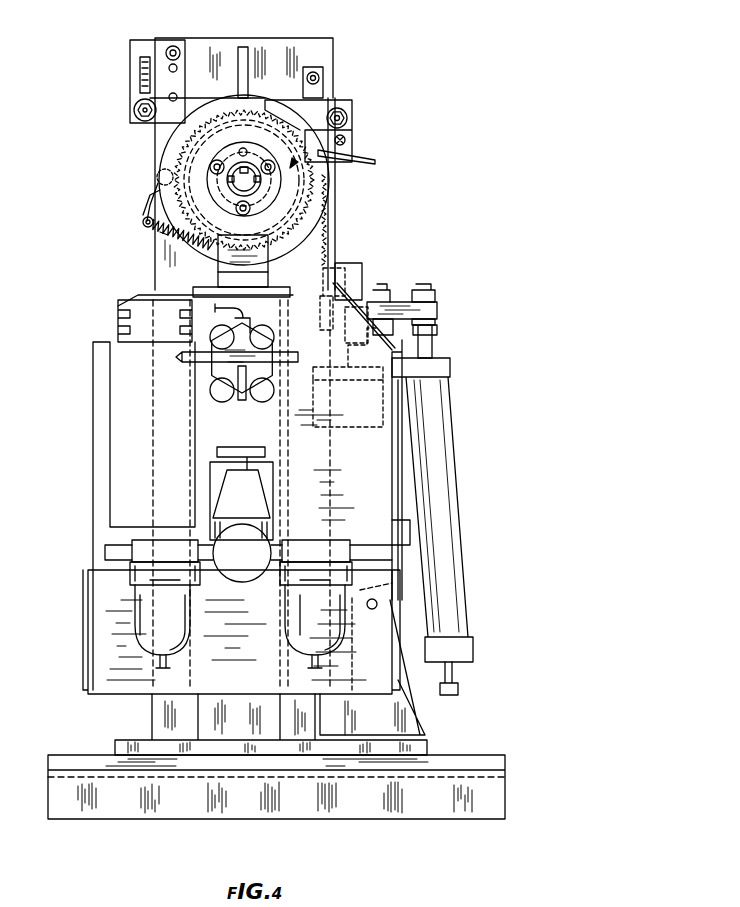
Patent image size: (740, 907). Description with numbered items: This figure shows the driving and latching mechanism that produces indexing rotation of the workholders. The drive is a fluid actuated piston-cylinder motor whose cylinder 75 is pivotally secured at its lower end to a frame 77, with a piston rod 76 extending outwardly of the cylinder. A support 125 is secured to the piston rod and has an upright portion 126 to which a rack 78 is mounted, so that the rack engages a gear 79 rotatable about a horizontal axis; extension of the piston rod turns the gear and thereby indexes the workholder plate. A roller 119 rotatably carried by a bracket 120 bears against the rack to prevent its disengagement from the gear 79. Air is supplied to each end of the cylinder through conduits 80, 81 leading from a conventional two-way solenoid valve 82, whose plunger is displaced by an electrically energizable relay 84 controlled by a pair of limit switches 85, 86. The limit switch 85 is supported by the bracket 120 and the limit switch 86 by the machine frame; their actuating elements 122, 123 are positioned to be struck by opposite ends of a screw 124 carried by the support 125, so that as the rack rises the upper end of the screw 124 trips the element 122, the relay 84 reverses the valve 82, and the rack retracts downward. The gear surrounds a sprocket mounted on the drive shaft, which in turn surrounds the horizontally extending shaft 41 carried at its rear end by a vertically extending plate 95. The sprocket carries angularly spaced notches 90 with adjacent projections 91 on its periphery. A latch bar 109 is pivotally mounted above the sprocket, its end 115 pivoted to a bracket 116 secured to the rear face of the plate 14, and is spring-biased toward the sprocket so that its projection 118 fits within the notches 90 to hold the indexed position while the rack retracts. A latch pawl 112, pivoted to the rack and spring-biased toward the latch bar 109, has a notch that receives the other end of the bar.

The plate 14 is at (273, 40).
The bracket 116 is at (130, 78).
The end of latch bar 115 is at (144, 122).
The latch pawl 112 is at (325, 77).
The bracket 120 is at (341, 101).
The roller 119 is at (348, 118).
The limit switch 85 is at (346, 141).
The actuating element 122 is at (362, 161).
The notches 90 is at (330, 183).
The projection 118 is at (244, 180).
The shaft 41 is at (238, 188).
The projections 91 is at (160, 163).
The plate 95 is at (336, 216).
The rack 78 is at (335, 268).
The gear 79 is at (245, 266).
The latch bar 109 is at (214, 98).
The relay 84 is at (112, 384).
The frame 77 is at (422, 730).
The upright portion 126 is at (365, 265).
The conduit 80 is at (243, 398).
The solenoid valve 82 is at (212, 367).
The conduit 81 is at (283, 362).
The piston rod 76 is at (330, 355).
The cylinder 75 is at (410, 505).
The limit switch 86 is at (434, 345).
The actuating element 123 is at (410, 300).
The support 125 is at (440, 310).
The screw 124 is at (384, 290).